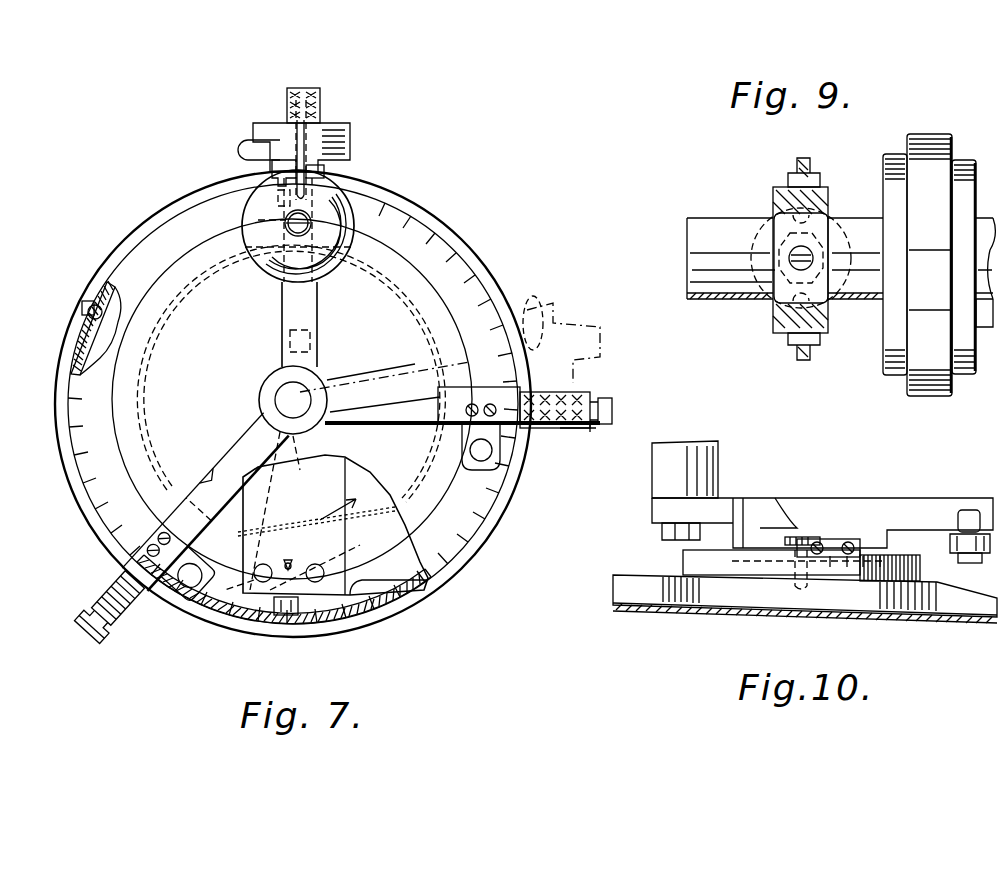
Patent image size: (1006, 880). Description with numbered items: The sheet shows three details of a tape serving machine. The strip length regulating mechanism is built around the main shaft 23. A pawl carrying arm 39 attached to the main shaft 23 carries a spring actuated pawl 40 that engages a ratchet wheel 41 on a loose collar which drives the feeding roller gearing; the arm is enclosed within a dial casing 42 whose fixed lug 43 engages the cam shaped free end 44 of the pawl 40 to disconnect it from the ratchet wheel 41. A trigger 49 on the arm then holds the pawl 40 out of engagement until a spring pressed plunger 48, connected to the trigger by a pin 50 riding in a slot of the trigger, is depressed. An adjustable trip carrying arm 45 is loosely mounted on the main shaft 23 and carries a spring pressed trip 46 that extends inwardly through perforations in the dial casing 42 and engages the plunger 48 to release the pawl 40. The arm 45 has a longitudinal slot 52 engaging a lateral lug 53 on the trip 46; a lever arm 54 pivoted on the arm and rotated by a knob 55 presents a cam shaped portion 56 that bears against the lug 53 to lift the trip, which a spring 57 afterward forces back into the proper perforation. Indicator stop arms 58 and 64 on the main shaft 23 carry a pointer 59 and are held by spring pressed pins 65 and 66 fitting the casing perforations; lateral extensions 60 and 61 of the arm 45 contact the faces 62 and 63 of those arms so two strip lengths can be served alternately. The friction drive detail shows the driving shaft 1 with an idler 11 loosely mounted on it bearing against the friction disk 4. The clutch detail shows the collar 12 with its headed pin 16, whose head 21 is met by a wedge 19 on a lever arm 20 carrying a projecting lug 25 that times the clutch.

In FIG. 9, the driving shaft 1 is at (711, 225).
In FIG. 9, the idler 11 is at (927, 158).
In FIG. 10, the friction disk 4 is at (679, 606).
In FIG. 10, the collar 12 is at (695, 561).
In FIG. 10, the headed pin 16 is at (794, 572).
In FIG. 10, the wedge 19 is at (838, 540).
In FIG. 10, the lever arm 20 is at (808, 510).
In FIG. 10, the head 21 is at (790, 540).
In FIG. 10, the projecting lug 25 is at (967, 512).
In FIG. 7, the main shaft 23 is at (333, 426).
In FIG. 7, the pawl carrying arm 39 is at (330, 481).
In FIG. 7, the pawl 40 is at (340, 580).
In FIG. 7, the ratchet wheel 41 is at (317, 530).
In FIG. 7, the dial casing 42 is at (75, 428).
In FIG. 7, the fixed lug 43 is at (84, 318).
In FIG. 7, the cam shaped free end 44 is at (268, 630).
In FIG. 7, the trip carrying arm 45 is at (310, 314).
In FIG. 7, the trip 46 is at (324, 177).
In FIG. 7, the plunger 48 is at (272, 612).
In FIG. 7, the trigger 49 is at (287, 560).
In FIG. 7, the pin 50 is at (298, 560).
In FIG. 7, the slot 52 is at (314, 126).
In FIG. 7, the lug 53 is at (297, 150).
In FIG. 7, the lever arm 54 is at (262, 221).
In FIG. 7, the knob 55 is at (356, 212).
In FIG. 7, the cam shaped portion 56 is at (285, 162).
In FIG. 7, the spring 57 is at (292, 90).
In FIG. 7, the arm 58 is at (408, 416).
In FIG. 7, the pointer 59 is at (479, 466).
In FIG. 7, the lateral extension 60 is at (350, 137).
In FIG. 7, the lateral extension 61 is at (247, 152).
In FIG. 7, the face 62 is at (586, 396).
In FIG. 7, the face 63 is at (102, 586).
In FIG. 7, the arm 64 is at (197, 473).
In FIG. 7, the spring pressed pin 65 is at (574, 430).
In FIG. 7, the spring pressed pin 66 is at (76, 610).